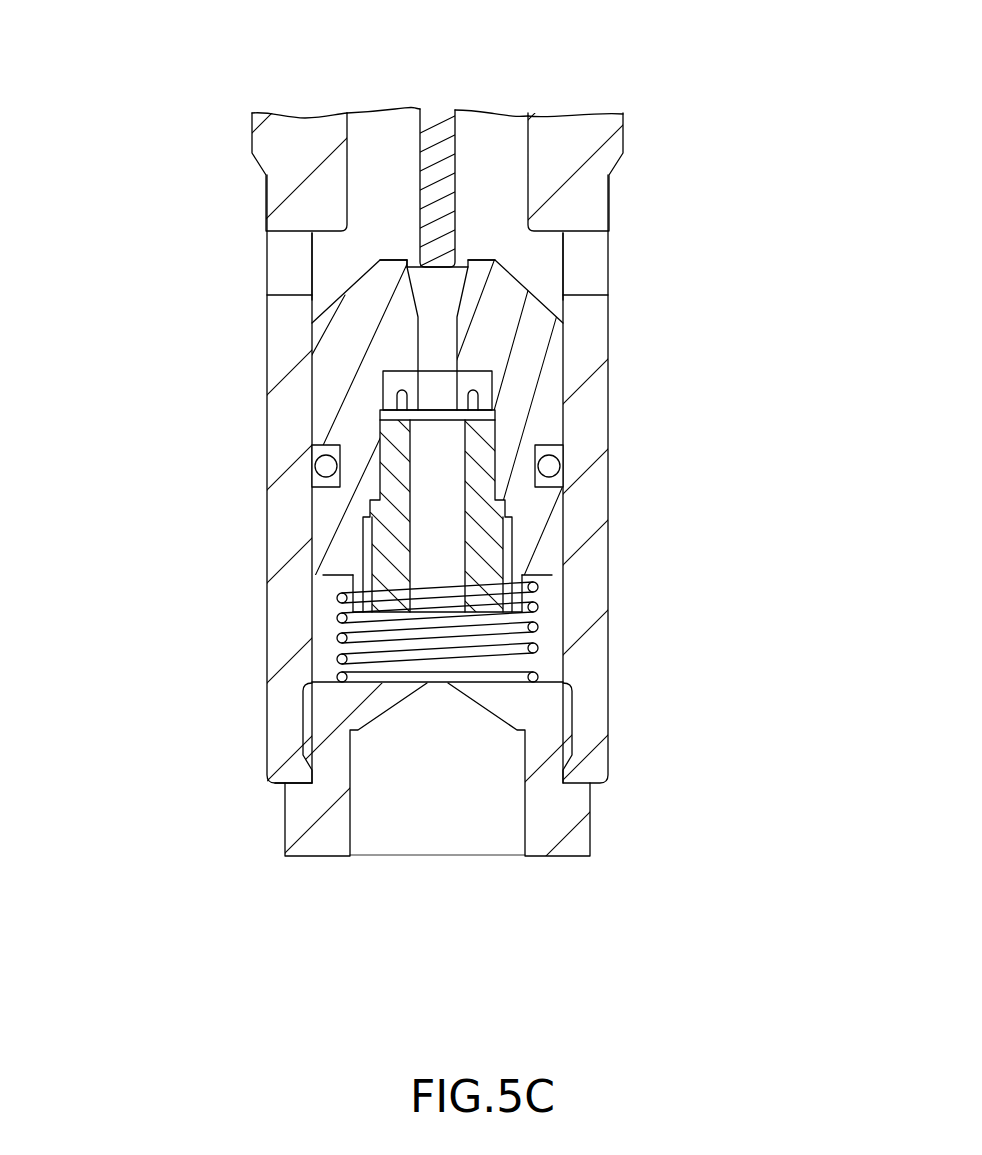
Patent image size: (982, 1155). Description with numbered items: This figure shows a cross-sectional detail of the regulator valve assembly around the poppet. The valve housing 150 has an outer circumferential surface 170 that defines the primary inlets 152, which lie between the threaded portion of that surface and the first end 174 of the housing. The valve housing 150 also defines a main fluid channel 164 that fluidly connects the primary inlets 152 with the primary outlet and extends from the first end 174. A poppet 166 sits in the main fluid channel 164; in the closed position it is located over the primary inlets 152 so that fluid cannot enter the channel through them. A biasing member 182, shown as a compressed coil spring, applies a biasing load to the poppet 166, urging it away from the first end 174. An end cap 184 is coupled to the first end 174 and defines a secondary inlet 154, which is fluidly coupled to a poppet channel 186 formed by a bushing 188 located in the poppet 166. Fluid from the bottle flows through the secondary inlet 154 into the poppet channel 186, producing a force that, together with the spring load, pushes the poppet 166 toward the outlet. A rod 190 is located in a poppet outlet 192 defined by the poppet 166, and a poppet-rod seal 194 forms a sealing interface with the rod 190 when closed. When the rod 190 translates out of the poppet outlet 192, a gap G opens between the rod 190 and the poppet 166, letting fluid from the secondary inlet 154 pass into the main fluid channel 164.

The valve housing 150 is at (300, 148).
The primary inlets 152 is at (268, 250).
The secondary inlet 154 is at (457, 858).
The main fluid channel 164 is at (498, 147).
The poppet 166 is at (340, 377).
The outer circumferential surface 170 is at (267, 713).
The first end 174 is at (287, 790).
The biasing member 182 is at (342, 638).
The end cap 184 is at (326, 826).
The poppet channel 186 is at (470, 544).
The bushing 188 is at (386, 552).
The rod 190 is at (441, 150).
The poppet outlet 192 is at (472, 286).
The poppet-rod seal 194 is at (487, 386).
The gap G is at (404, 252).